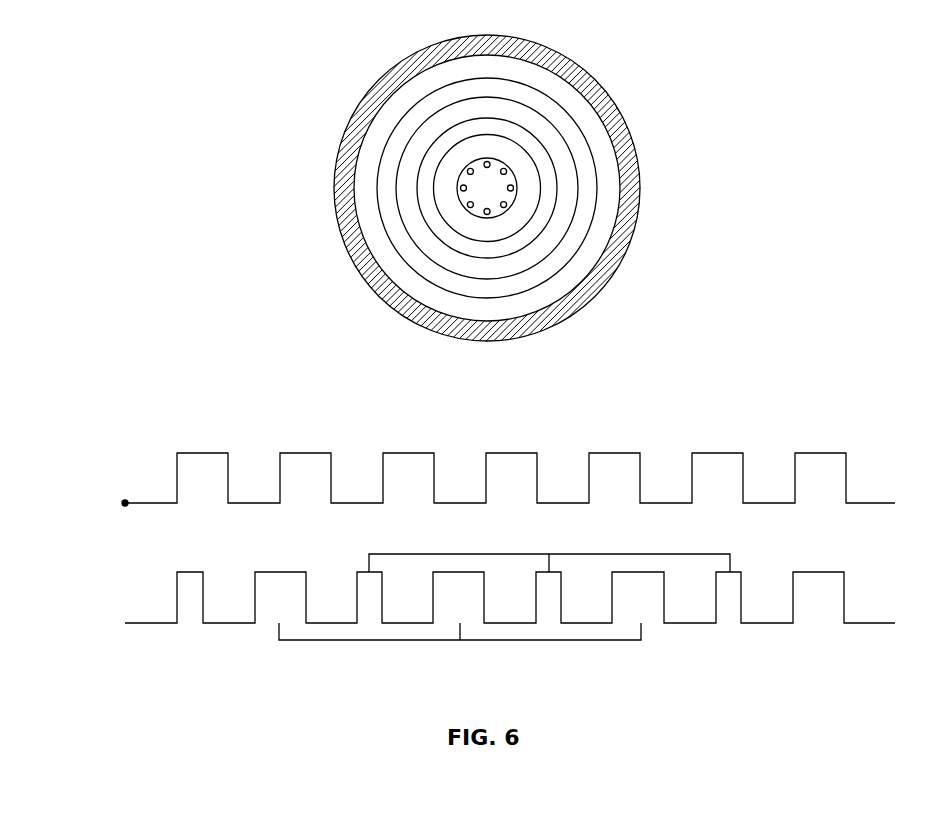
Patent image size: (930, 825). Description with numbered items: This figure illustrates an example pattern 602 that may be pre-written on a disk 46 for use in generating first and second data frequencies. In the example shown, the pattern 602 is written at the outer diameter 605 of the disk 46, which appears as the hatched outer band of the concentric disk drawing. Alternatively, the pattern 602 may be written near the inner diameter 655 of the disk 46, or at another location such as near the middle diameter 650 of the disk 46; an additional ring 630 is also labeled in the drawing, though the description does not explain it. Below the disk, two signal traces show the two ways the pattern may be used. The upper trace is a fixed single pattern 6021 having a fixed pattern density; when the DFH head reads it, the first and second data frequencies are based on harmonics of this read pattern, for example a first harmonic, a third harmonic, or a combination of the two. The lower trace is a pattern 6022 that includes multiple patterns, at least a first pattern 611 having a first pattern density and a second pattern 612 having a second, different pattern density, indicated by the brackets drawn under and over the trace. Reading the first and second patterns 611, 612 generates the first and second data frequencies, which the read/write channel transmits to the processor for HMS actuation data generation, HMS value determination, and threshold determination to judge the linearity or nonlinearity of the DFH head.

The disk 46 is at (494, 179).
The outer diameter 605 is at (428, 48).
The pattern 602 is at (628, 218).
The inner ring 630 is at (348, 243).
The middle diameter 650 is at (382, 145).
The inner diameter 655 is at (417, 203).
The fixed single pattern 6021 is at (143, 486).
The pattern 6022 is at (143, 616).
The second pattern 612 is at (678, 553).
The first pattern 611 is at (552, 642).